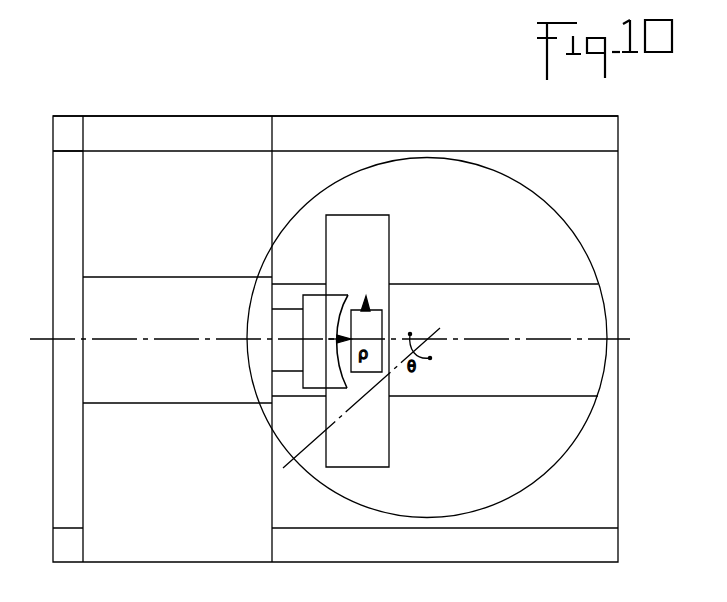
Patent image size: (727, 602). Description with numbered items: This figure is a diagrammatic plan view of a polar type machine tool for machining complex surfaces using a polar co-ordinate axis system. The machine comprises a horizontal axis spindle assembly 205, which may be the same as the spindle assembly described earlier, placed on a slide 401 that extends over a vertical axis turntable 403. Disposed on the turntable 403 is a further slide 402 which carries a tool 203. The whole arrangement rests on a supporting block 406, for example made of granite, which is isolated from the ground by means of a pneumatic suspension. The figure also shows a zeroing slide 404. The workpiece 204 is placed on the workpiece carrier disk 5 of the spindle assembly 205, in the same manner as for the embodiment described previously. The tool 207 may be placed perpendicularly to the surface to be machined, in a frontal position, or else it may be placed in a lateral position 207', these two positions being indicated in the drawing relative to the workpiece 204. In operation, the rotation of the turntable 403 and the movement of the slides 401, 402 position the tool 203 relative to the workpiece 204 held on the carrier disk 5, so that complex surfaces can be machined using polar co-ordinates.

The slide 401 is at (375, 135).
The slide 402 is at (590, 313).
The vertical axis turntable 403 is at (573, 425).
The zeroing slide 404 is at (372, 226).
The supporting block 406 is at (590, 502).
The tool 203 is at (373, 320).
The workpiece 204 is at (312, 299).
The horizontal axis spindle assembly 205 is at (139, 296).
The tool 207 is at (363, 371).
The lateral position of tool 207' is at (367, 274).
The workpiece carrier disk 5 is at (273, 325).